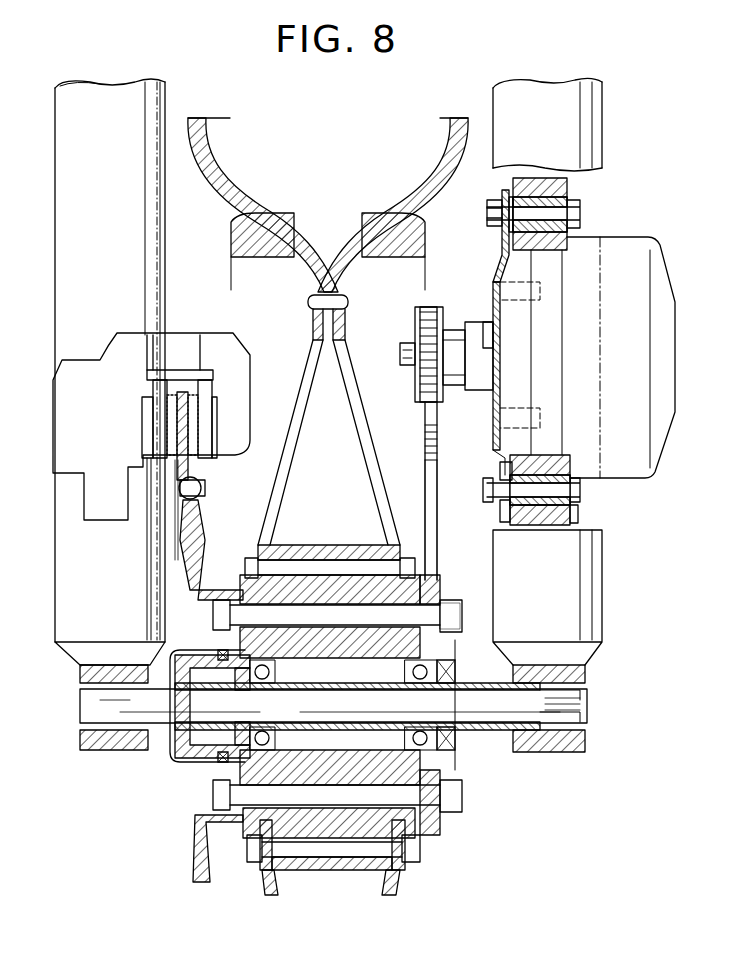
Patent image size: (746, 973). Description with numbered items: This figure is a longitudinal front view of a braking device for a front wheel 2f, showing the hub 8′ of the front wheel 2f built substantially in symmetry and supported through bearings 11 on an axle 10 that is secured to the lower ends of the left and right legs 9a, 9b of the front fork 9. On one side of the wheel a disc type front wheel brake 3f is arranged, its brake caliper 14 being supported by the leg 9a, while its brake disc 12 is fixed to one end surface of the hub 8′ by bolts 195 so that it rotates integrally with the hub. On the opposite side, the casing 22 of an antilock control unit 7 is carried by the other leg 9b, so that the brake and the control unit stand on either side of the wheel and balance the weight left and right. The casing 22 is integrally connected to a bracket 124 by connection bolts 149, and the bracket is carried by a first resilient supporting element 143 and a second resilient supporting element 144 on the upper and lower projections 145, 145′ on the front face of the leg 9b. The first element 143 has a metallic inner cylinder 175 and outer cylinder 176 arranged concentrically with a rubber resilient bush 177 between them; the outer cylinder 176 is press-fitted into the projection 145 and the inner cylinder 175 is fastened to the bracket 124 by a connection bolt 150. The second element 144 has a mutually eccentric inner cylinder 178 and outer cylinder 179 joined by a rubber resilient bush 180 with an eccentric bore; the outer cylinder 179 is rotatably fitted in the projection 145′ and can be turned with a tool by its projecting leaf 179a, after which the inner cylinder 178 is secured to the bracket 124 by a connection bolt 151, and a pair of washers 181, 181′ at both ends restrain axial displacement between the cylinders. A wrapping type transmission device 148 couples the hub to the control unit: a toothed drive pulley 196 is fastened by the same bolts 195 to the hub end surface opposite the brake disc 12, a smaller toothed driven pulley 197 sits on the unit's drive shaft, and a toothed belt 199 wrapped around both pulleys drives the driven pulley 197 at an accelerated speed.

The front fork 9 is at (55, 140).
The left leg of front fork 9a is at (63, 213).
The right leg of front fork 9b is at (585, 135).
The front wheel 2f is at (435, 118).
The disc type front wheel brake 3f is at (108, 345).
The brake caliper 14 is at (178, 335).
The brake disc 12 is at (179, 494).
The antilock control unit 7 is at (666, 244).
The casing 22 is at (663, 290).
The upper projection 145 is at (540, 180).
The lower projection 145′ is at (532, 548).
The first resilient supporting element 143 is at (575, 200).
The connection bolt 150 is at (580, 214).
The connection bolt 151 is at (580, 497).
The inner cylinder 175 is at (488, 212).
The outer cylinder 176 is at (567, 250).
The resilient bush 177 is at (548, 252).
The bracket 124 is at (500, 250).
The second resilient supporting element 144 is at (557, 457).
The wrapping type transmission device 148 is at (430, 305).
The connection bolts 149 is at (486, 328).
The toothed driven pulley 197 is at (415, 322).
The inner cylinder 178 is at (490, 490).
The outer cylinder 179 is at (548, 527).
The projecting leaf 179a is at (580, 462).
The resilient bush 180 is at (525, 527).
The washer 181 is at (508, 518).
The washer 181′ is at (572, 518).
The hub 8′ is at (320, 547).
The toothed belt 199 is at (438, 570).
The toothed drive pulley 196 is at (440, 592).
The bolts 195 is at (462, 618).
The axle 10 is at (82, 708).
The bearings 11 is at (262, 663).